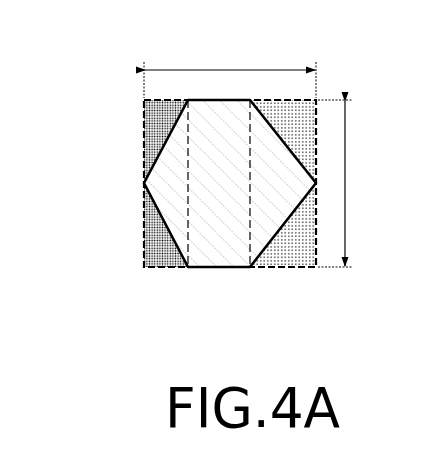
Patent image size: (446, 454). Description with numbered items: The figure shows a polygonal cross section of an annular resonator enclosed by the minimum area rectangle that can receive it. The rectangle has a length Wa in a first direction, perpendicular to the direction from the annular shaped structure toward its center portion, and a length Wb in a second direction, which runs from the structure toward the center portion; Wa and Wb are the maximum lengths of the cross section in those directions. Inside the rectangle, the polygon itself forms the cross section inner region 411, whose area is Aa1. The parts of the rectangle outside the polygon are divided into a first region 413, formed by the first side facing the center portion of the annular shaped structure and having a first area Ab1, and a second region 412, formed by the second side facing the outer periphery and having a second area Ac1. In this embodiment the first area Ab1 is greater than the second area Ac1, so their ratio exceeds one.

The cross section inner region 411 is at (218, 245).
The second region 412 is at (158, 241).
The first region 413 is at (294, 255).
The area of the cross section inner region Aa1 is at (172, 163).
The first area Ab1 is at (300, 119).
The second area Ac1 is at (148, 104).
The length in the first direction Wa is at (352, 183).
The length in the second direction Wb is at (230, 65).